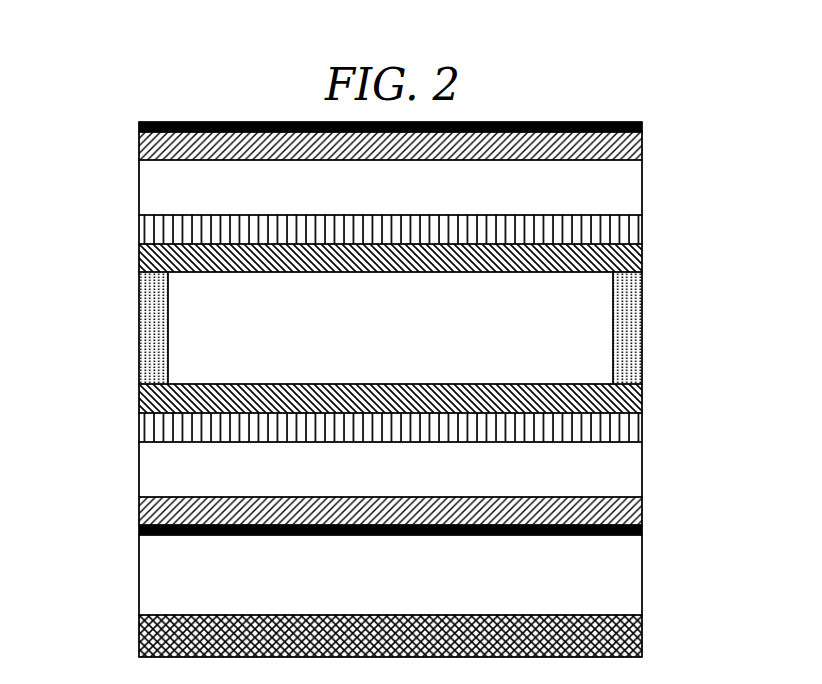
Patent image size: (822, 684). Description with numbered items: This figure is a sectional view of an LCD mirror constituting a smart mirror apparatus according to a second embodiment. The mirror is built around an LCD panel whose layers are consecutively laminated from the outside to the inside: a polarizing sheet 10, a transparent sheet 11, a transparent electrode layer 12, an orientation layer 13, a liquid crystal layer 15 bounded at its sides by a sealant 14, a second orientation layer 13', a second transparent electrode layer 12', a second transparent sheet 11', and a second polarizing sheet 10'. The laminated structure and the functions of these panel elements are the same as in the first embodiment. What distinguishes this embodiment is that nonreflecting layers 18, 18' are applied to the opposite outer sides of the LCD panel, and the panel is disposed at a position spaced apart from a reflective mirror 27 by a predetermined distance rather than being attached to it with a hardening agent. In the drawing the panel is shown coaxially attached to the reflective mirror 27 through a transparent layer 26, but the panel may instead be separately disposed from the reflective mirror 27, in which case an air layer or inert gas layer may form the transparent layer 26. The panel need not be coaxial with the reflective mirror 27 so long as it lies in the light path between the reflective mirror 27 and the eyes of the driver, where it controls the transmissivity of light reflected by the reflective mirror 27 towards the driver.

The nonreflecting layer 18 is at (437, 128).
The polarizing sheet 10 is at (345, 145).
The transparent sheet 11 is at (437, 187).
The transparent electrode layer 12 is at (345, 229).
The orientation layer 13 is at (437, 258).
The sealant 14 is at (139, 332).
The liquid crystal layer 15 is at (403, 337).
The orientation layer 13' is at (440, 398).
The transparent electrode layer 12' is at (345, 427).
The transparent sheet 11' is at (440, 469).
The polarizing sheet 10' is at (345, 510).
The nonreflecting layer 18' is at (440, 530).
The transparent layer 26 is at (139, 577).
The reflective mirror 27 is at (642, 632).